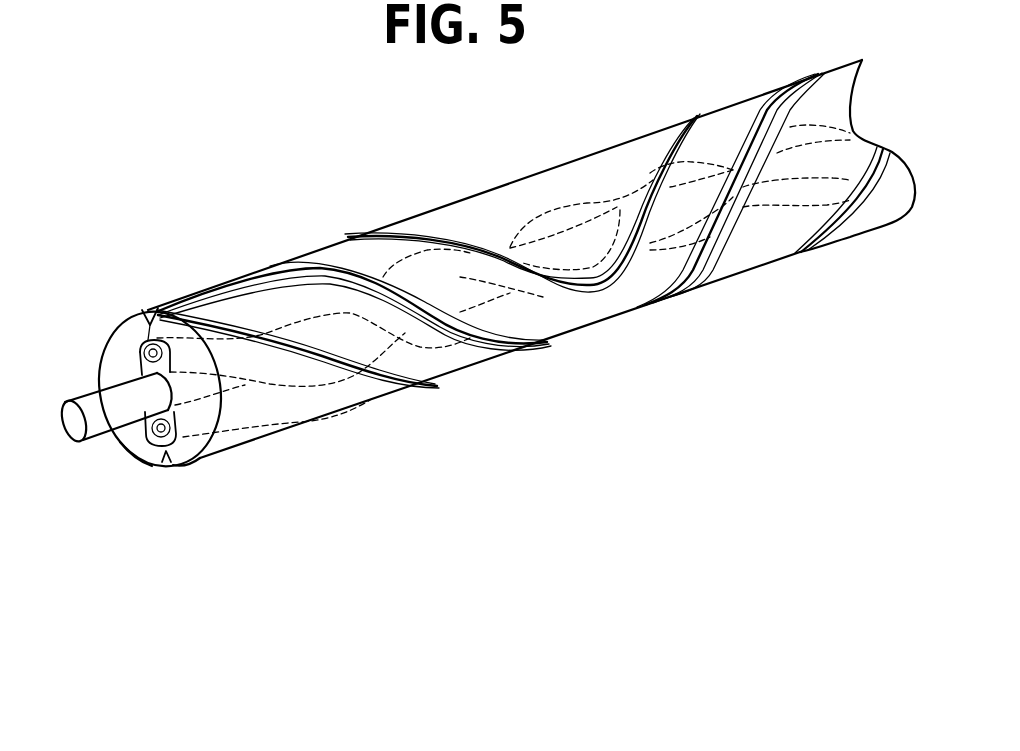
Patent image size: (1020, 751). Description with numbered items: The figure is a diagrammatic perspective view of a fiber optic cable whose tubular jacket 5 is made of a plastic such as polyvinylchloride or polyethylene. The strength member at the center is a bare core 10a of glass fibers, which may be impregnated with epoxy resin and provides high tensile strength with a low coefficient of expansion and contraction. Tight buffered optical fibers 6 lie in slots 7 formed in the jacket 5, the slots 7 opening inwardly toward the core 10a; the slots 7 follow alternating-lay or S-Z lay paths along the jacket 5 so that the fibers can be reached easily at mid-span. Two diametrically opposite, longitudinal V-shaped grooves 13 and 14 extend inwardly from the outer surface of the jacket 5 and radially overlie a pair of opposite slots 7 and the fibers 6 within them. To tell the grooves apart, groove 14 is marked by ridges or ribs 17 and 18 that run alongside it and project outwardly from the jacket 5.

The tubular jacket 5 is at (117, 337).
The tight buffered optical fiber 6 is at (150, 336).
The slot 7 is at (310, 297).
The bare core 10a is at (80, 420).
The V-shaped groove 13 is at (151, 310).
The V-shaped groove 14 is at (164, 463).
The ridge 17 is at (147, 467).
The ridge 18 is at (200, 460).